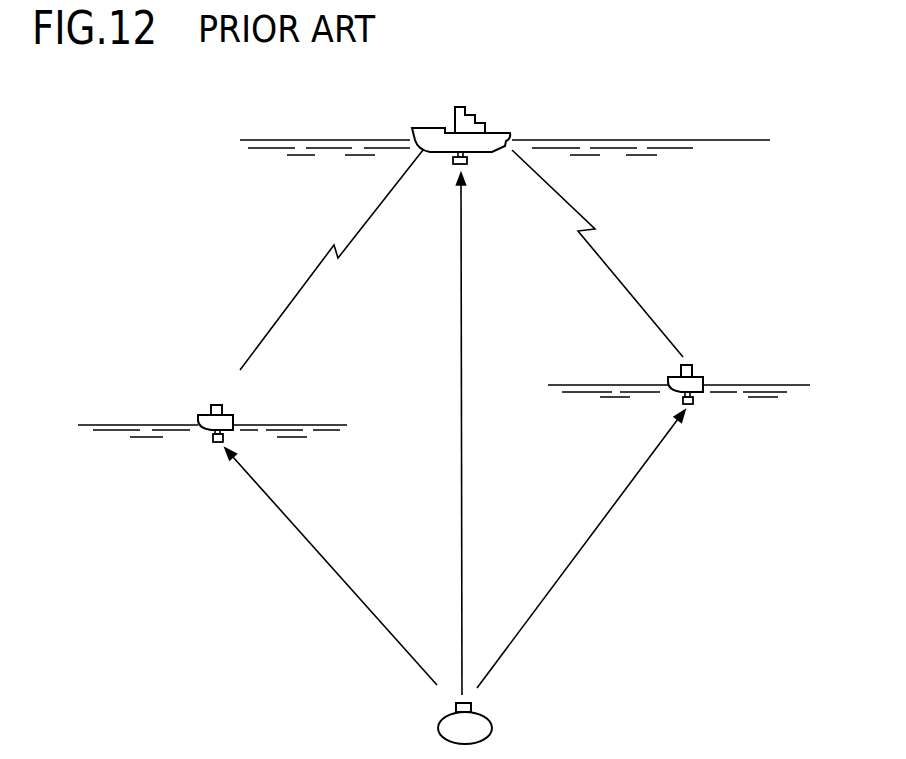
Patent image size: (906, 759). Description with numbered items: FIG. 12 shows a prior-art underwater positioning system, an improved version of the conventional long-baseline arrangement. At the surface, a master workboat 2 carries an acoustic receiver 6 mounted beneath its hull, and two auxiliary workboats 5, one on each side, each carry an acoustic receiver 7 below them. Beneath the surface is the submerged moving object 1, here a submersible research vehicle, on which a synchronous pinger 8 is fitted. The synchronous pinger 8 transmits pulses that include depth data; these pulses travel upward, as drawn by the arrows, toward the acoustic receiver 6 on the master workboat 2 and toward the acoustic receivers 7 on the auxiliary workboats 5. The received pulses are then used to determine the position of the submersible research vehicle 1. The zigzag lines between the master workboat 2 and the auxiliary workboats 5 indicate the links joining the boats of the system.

The submerged moving object 1 is at (443, 728).
The master workboat 2 is at (425, 134).
The auxiliary workboats 5 is at (223, 409).
The acoustic receiver 6 is at (468, 162).
The acoustic receivers 7 is at (212, 439).
The synchronous pinger 8 is at (471, 708).